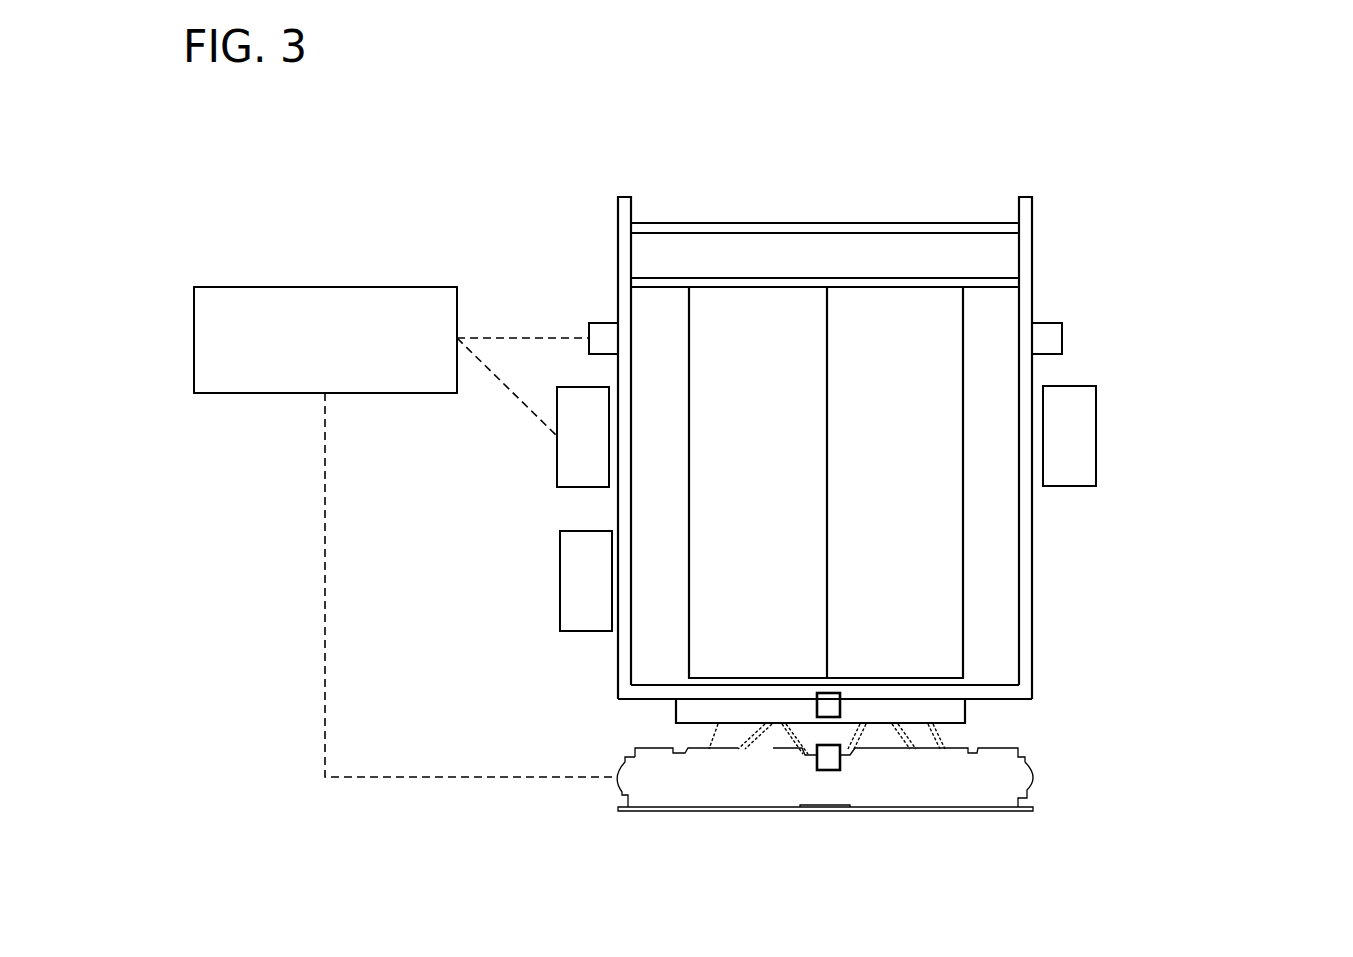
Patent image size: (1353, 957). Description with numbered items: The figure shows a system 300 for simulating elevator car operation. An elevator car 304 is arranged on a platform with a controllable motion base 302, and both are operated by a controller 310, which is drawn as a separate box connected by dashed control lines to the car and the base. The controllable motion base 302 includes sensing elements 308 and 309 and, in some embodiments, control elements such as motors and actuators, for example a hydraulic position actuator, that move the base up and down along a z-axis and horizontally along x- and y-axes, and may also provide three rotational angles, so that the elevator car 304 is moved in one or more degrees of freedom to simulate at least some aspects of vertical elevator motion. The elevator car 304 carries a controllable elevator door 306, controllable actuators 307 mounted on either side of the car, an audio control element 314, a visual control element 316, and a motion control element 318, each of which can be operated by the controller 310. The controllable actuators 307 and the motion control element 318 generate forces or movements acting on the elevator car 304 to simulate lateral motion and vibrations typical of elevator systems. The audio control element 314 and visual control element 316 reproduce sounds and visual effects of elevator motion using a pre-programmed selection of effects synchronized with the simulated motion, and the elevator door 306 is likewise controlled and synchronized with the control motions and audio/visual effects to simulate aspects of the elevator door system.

The system 300 is at (575, 107).
The controllable motion base 302 is at (993, 765).
The elevator car 304 is at (825, 460).
The controllable elevator door 306 is at (775, 607).
The controllable actuators 307 is at (936, 281).
The sensing element 308 is at (825, 757).
The sensing element 309 is at (825, 703).
The controller 310 is at (350, 373).
The audio control element 314 is at (584, 487).
The visual control element 316 is at (1096, 435).
The motion control element 318 is at (560, 579).